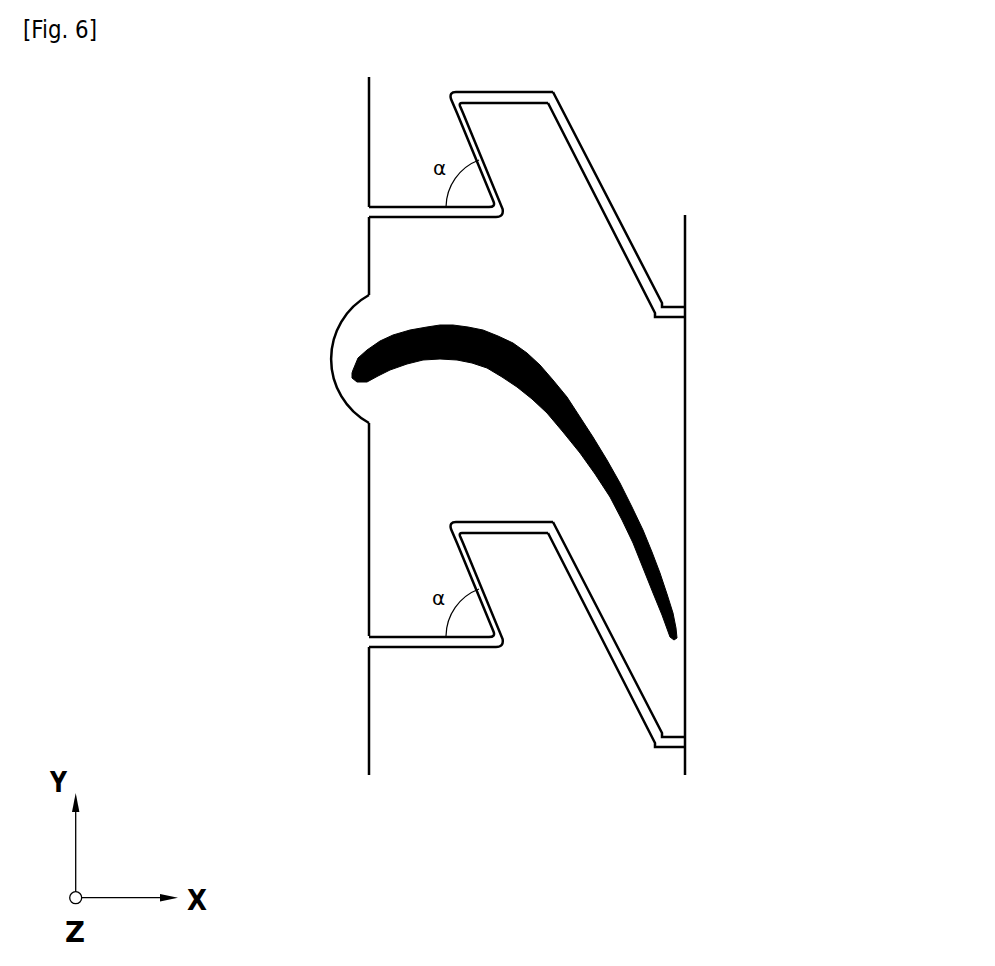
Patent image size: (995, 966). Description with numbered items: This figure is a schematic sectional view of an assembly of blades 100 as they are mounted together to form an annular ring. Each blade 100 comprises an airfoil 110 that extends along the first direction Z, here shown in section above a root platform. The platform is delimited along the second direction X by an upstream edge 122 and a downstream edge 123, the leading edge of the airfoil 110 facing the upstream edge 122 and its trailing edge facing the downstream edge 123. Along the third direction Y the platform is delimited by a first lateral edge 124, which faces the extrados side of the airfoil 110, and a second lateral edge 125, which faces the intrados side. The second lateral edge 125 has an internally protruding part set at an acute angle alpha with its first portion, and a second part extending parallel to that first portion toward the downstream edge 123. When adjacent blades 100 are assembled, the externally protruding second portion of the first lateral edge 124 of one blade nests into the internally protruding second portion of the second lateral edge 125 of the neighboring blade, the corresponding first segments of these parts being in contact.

The blade 100 is at (346, 110).
The airfoil 110 is at (574, 412).
The upstream edge 122 is at (368, 448).
The downstream edge 123 is at (686, 498).
The first lateral edge 124 is at (497, 221).
The second lateral edge 125 is at (603, 184).